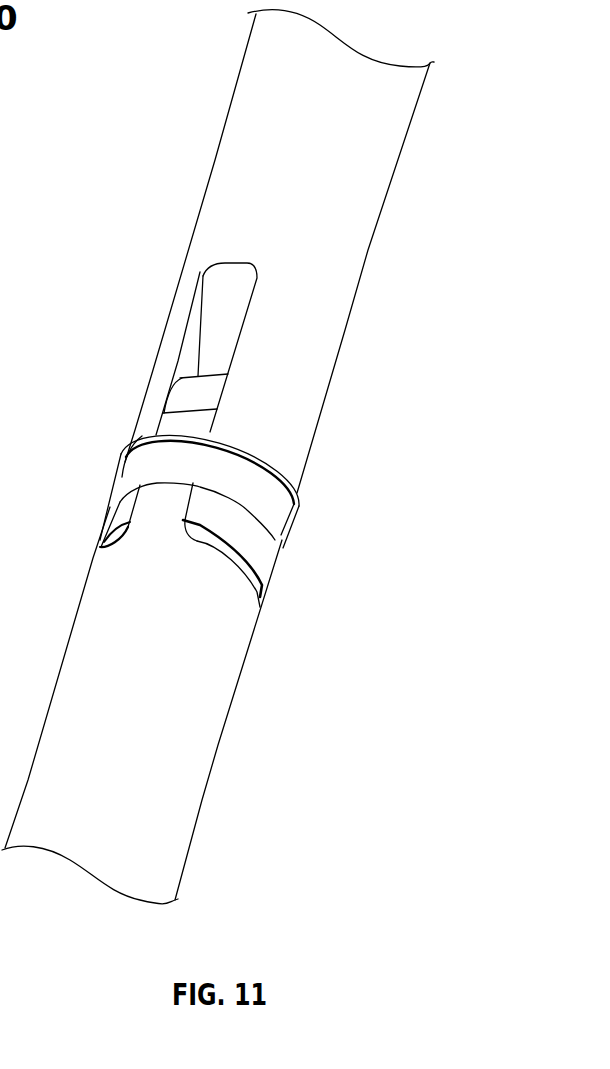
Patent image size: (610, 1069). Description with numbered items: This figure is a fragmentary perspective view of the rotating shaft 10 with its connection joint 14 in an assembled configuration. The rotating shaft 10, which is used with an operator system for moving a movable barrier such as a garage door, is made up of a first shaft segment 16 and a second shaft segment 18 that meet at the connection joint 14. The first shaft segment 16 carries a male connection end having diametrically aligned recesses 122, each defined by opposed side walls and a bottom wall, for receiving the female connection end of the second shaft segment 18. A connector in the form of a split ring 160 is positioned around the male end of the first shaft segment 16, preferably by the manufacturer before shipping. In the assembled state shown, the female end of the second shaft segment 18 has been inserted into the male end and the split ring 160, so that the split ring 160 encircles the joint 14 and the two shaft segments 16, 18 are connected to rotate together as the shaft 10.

The rotating shaft 10 is at (465, 130).
The connection joint 14 is at (355, 487).
The first shaft segment 16 is at (347, 273).
The second shaft segment 18 is at (200, 758).
The recess 122 is at (220, 302).
The split ring 160 is at (270, 516).